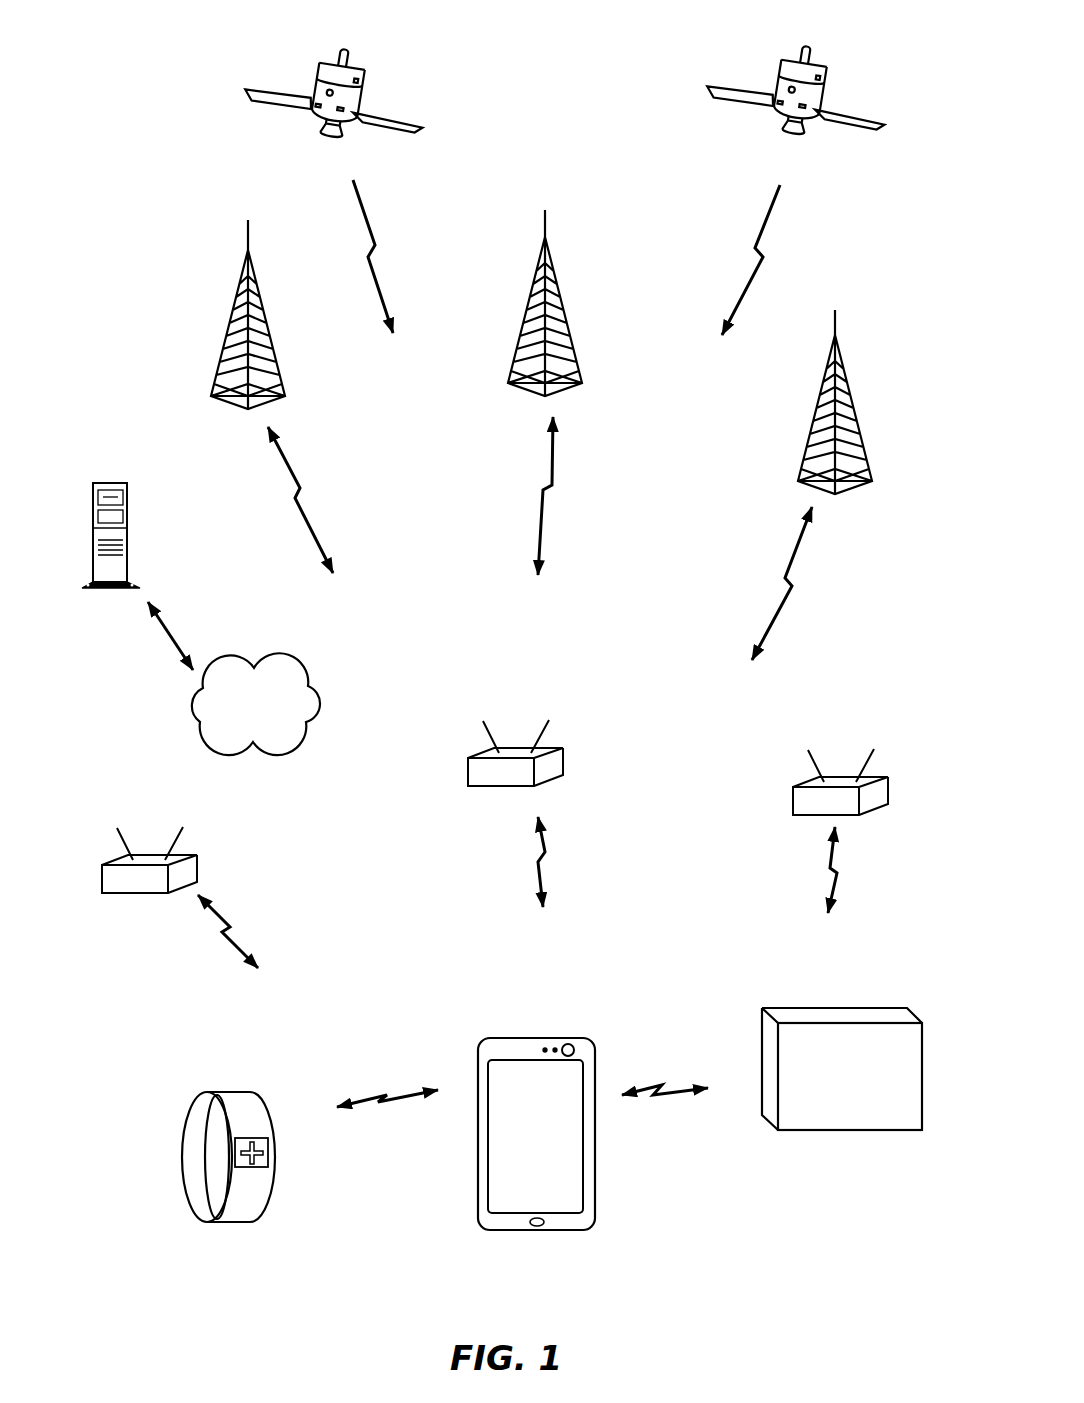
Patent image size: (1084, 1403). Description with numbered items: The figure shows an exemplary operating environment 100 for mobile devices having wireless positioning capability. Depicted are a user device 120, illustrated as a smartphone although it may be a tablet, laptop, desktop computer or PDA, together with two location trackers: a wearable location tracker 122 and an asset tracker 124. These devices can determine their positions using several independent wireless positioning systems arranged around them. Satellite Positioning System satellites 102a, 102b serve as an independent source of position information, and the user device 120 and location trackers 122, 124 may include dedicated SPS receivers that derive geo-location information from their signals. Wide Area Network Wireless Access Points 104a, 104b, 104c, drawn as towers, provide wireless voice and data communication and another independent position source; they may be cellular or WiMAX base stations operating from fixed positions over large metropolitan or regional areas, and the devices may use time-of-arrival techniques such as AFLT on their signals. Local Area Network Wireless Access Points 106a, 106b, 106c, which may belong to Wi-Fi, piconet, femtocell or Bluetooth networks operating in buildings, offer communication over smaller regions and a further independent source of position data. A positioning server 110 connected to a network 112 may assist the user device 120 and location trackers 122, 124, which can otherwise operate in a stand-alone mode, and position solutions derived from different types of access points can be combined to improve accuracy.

The operating environment 100 is at (170, 62).
The Satellite Positioning System satellite 102a is at (346, 52).
The Satellite Positioning System satellite 102b is at (800, 48).
The Wide Area Network Wireless Access Point 104a is at (247, 226).
The Wide Area Network Wireless Access Point 104b is at (545, 218).
The Wide Area Network Wireless Access Point 104c is at (835, 318).
The Local Area Network Wireless Access Point 106a is at (197, 855).
The Local Area Network Wireless Access Point 106b is at (564, 752).
The Local Area Network Wireless Access Point 106c is at (793, 792).
The positioning server 110 is at (107, 483).
The network 112 is at (277, 657).
The user device 120 is at (505, 1036).
The wearable location tracker 122 is at (240, 1092).
The asset tracker 124 is at (800, 1131).